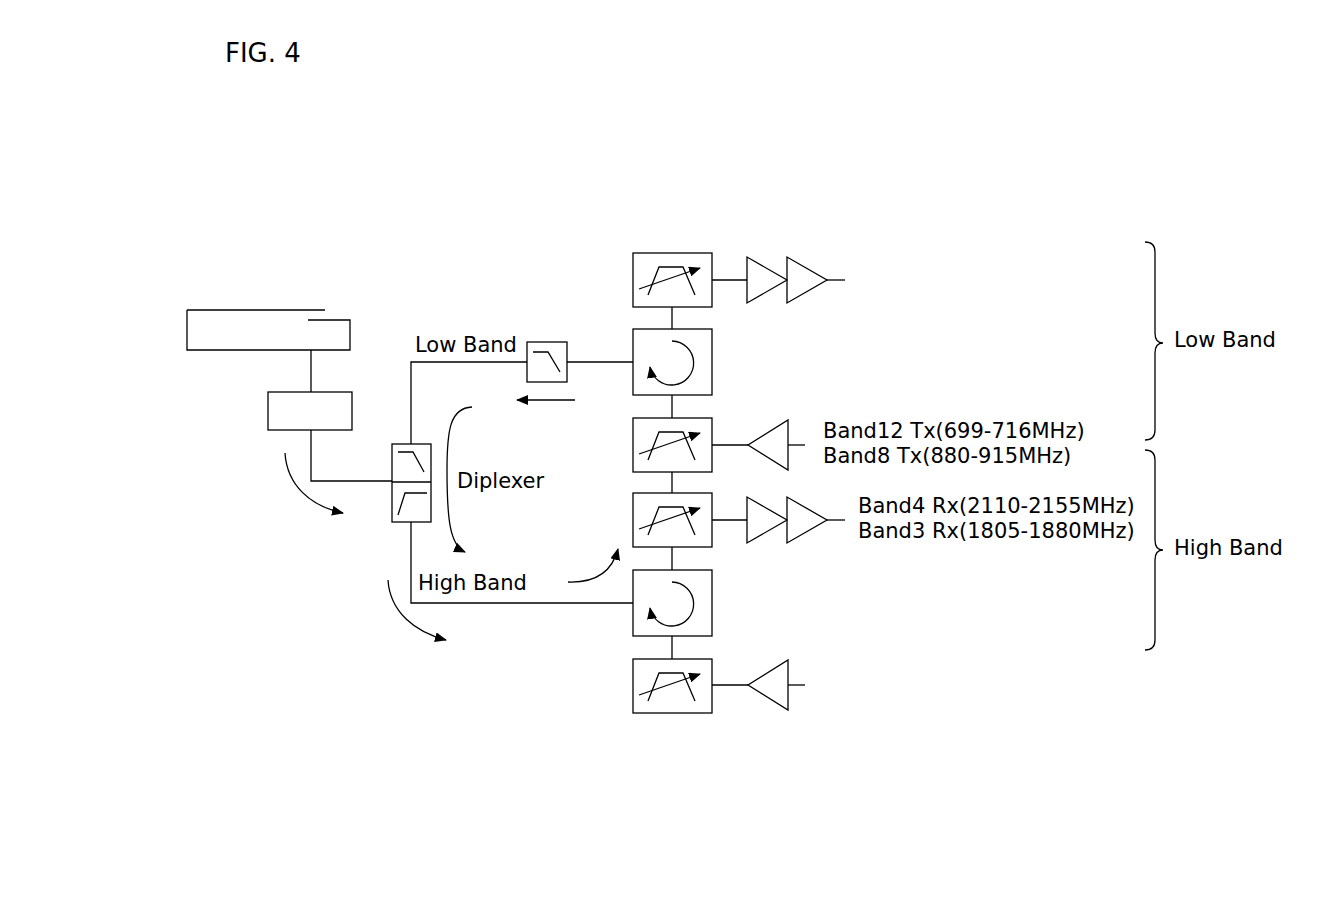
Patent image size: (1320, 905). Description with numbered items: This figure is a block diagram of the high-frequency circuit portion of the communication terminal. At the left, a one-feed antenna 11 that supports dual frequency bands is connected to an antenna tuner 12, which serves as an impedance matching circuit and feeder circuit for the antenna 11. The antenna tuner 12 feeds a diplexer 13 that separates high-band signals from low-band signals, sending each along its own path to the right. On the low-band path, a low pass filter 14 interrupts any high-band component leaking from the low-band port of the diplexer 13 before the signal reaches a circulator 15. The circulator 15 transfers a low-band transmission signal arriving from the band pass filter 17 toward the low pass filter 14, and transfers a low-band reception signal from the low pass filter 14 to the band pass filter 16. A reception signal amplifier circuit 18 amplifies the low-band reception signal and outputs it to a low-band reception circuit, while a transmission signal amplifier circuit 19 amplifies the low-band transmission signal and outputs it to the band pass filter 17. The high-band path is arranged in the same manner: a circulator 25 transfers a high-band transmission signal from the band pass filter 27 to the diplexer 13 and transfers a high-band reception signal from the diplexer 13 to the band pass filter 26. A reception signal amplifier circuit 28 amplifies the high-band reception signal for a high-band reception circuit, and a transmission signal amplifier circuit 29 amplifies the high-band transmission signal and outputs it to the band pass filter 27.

The antenna 11 is at (261, 310).
The antenna tuner 12 is at (268, 412).
The diplexer 13 is at (382, 529).
The low pass filter 14 is at (546, 342).
The circulator 15 is at (712, 362).
The band pass filter 16 is at (673, 253).
The band pass filter 17 is at (633, 445).
The reception signal amplifier circuit 18 is at (799, 243).
The transmission signal amplifier circuit 19 is at (790, 420).
The circulator 25 is at (712, 603).
The band pass filter 26 is at (633, 520).
The band pass filter 27 is at (633, 685).
The reception signal amplifier circuit 28 is at (799, 559).
The transmission signal amplifier circuit 29 is at (788, 710).